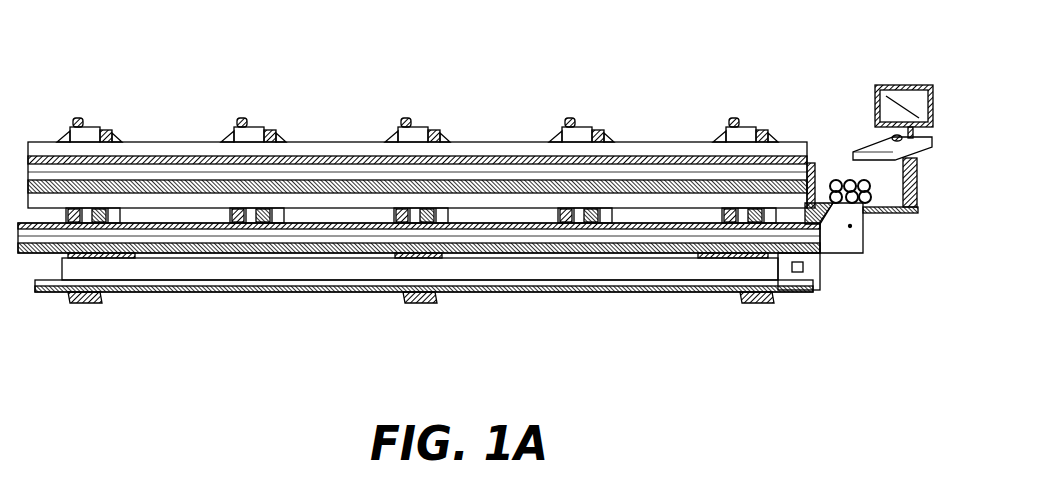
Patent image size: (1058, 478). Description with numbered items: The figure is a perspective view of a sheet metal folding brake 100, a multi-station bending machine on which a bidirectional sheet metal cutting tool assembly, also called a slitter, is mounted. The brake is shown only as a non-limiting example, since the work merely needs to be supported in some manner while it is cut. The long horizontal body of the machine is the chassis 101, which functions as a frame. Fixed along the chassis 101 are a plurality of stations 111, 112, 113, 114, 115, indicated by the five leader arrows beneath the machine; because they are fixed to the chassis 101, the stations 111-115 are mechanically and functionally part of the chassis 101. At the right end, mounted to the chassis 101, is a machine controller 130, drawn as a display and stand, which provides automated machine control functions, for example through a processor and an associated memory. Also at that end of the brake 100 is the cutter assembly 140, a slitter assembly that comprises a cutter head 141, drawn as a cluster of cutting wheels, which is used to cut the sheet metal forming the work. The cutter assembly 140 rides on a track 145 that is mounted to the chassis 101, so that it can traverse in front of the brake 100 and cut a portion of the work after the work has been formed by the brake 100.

The sheet metal folding brake 100 is at (602, 87).
The chassis 101 is at (795, 290).
The station 111 is at (125, 308).
The station 112 is at (260, 308).
The station 113 is at (452, 310).
The station 114 is at (602, 310).
The station 115 is at (722, 305).
The machine controller 130 is at (860, 90).
The cutter assembly 140 is at (878, 255).
The cutter head 141 is at (836, 178).
The track 145 is at (483, 225).